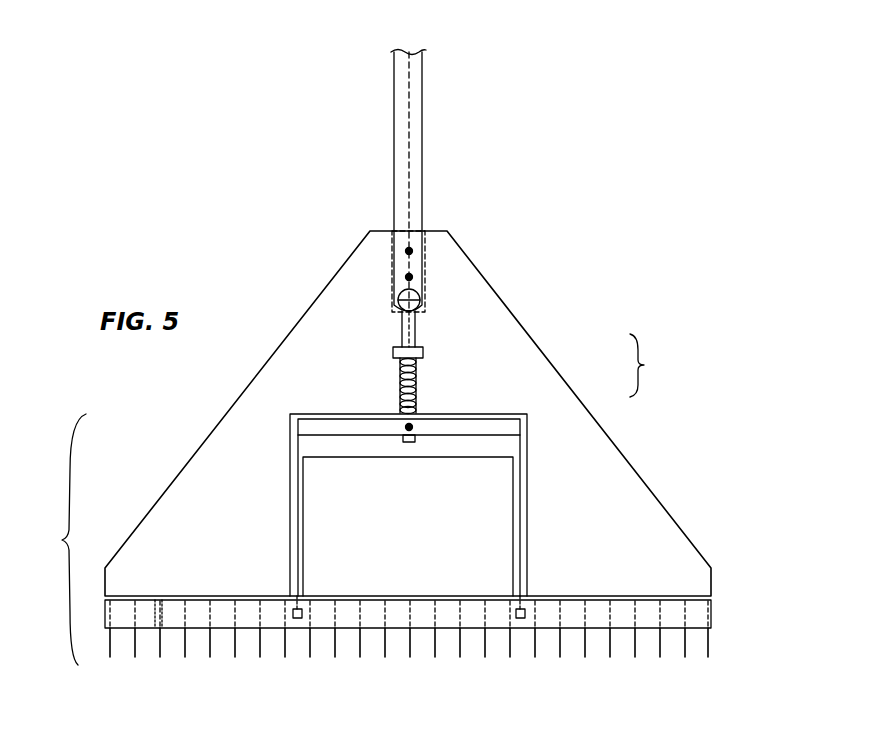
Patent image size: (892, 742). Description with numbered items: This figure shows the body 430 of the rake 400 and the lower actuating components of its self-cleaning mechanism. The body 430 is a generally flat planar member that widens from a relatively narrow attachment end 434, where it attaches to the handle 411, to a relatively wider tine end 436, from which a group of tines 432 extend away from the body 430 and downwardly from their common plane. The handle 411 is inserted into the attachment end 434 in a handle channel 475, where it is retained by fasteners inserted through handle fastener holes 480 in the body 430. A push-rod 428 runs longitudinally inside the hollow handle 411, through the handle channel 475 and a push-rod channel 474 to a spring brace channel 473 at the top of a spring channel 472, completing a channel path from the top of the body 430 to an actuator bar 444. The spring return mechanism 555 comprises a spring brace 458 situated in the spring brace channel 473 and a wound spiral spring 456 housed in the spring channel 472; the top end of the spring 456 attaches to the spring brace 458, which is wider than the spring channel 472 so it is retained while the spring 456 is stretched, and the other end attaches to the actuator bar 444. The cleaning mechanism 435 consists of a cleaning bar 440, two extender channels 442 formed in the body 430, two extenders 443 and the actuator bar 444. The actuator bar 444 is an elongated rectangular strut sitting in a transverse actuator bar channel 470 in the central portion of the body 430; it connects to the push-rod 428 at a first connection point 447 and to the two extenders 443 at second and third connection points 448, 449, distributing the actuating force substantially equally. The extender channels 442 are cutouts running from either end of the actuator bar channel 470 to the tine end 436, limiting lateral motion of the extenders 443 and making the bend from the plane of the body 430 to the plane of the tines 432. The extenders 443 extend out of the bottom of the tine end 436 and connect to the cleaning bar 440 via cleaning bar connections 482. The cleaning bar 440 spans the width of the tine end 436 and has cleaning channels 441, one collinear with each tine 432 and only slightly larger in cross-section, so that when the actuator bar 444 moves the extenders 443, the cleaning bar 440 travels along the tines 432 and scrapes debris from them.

The rake 400 is at (629, 113).
The handle 411 is at (422, 70).
The push-rod 428 is at (410, 108).
The body 430 is at (615, 455).
The tines 432 is at (212, 652).
The attachment end 434 is at (281, 217).
The cleaning mechanism 435 is at (50, 539).
The tine end 436 is at (788, 578).
The cleaning bar 440 is at (690, 630).
The cleaning channels 441 is at (147, 617).
The extender channels 442 is at (527, 500).
The extenders 443 is at (520, 536).
The actuator bar 444 is at (525, 422).
The first connection point 447 is at (409, 443).
The second connection point 448 is at (290, 440).
The third connection point 449 is at (520, 435).
The spring 456 is at (417, 387).
The spring brace 458 is at (423, 357).
The actuator bar channel 470 is at (440, 452).
The spring channel 472 is at (400, 400).
The spring brace channel 473 is at (393, 351).
The push-rod channel 474 is at (415, 337).
The handle channel 475 is at (424, 260).
The handle fastener holes 480 is at (407, 251).
The cleaning bar connections 482 is at (295, 625).
The spring return mechanism 555 is at (661, 365).